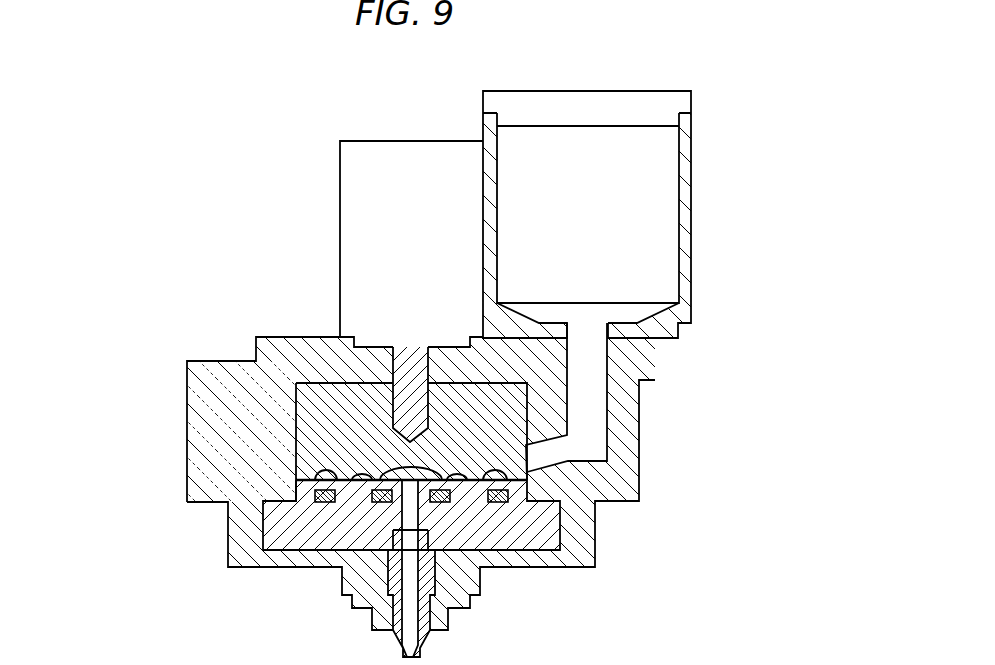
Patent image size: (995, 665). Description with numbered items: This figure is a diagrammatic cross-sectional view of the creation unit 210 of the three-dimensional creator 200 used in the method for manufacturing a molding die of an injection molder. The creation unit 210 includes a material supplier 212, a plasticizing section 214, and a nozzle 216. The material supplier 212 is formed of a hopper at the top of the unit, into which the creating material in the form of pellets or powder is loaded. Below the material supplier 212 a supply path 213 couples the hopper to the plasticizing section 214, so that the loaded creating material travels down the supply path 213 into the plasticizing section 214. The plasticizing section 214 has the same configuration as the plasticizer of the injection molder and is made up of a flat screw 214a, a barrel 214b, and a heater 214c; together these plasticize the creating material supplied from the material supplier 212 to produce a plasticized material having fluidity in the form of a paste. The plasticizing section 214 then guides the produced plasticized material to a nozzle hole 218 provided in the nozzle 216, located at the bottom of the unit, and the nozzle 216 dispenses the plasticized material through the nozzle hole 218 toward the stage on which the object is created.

The three-dimensional shaping apparatus / plasticizing device 200 is at (702, 26).
The creation unit 210 is at (686, 72).
The material supplier 212 is at (687, 180).
The supply path 213 is at (585, 410).
The plasticizing section 214 is at (113, 423).
The flat screw 214a is at (318, 470).
The barrel 214b is at (330, 520).
The heater 214c is at (313, 492).
The nozzle 216 is at (448, 618).
The nozzle hole 218 is at (412, 640).